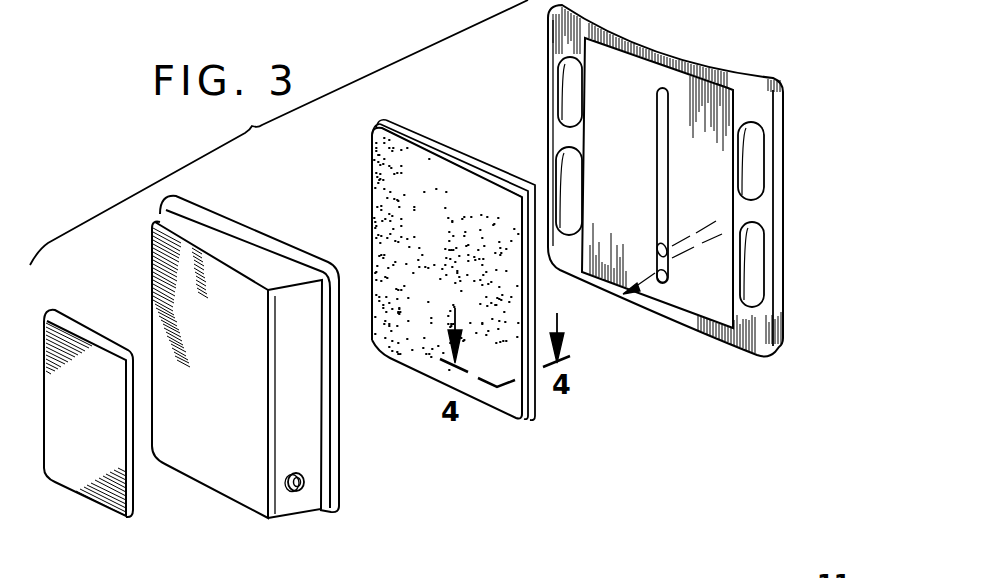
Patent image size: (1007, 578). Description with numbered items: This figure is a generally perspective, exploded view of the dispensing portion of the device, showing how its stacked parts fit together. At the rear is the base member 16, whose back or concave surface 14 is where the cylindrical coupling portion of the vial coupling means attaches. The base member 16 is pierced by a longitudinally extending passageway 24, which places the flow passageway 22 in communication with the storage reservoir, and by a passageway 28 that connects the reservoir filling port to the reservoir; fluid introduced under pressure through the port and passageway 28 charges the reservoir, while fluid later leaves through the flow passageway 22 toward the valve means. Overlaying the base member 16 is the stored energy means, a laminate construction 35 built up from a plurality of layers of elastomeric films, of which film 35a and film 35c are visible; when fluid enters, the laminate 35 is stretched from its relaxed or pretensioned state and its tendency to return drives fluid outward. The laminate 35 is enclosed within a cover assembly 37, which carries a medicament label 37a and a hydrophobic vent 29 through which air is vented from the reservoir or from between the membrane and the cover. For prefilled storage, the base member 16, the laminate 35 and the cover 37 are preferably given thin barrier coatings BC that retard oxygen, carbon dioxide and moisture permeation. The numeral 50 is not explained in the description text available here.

The back or concave surface 14 is at (712, 207).
The base member 16 is at (730, 68).
The flow passageway 22 is at (655, 252).
The longitudinally extending passageway 24 is at (663, 165).
The passageway 28 is at (662, 282).
The vent 29 is at (297, 493).
The laminate construction 35 is at (372, 168).
The elastomeric film 35a is at (380, 215).
The elastomeric film 35c is at (538, 389).
The cover assembly 37 is at (150, 265).
The medicament label 37a is at (100, 480).
The assembly 50 is at (556, 577).
The barrier coatings BC is at (217, 468).